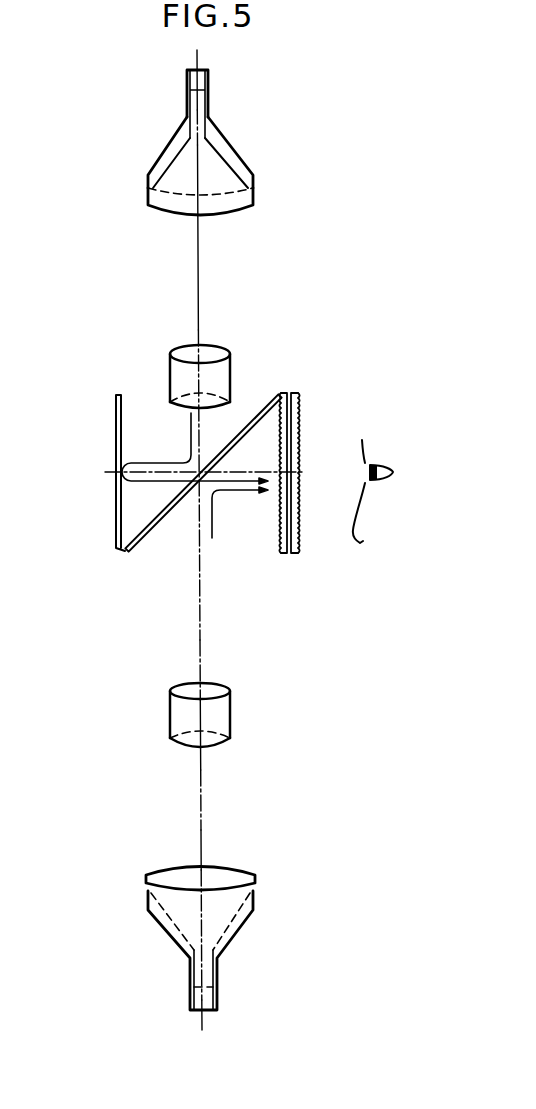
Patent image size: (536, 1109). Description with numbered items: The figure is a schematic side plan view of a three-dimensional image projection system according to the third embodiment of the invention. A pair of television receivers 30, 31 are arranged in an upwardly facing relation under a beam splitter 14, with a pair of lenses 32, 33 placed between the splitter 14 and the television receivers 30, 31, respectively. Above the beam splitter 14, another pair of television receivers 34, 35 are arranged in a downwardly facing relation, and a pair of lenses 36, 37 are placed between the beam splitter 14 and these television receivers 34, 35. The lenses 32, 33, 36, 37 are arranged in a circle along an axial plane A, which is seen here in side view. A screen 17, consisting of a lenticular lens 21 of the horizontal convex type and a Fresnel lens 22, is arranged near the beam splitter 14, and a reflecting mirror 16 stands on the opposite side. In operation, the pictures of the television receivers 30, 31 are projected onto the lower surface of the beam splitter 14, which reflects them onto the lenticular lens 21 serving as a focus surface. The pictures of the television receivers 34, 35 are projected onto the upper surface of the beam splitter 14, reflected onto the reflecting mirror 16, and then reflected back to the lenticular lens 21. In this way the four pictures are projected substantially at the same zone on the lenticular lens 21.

The beam splitter 14 is at (155, 524).
The reflecting mirror 16 is at (122, 525).
The screen 17 is at (313, 481).
The lenticular lens 21 is at (284, 555).
The Fresnel lens 22 is at (295, 555).
The television receiver 30 is at (246, 911).
The television receiver 31 is at (240, 872).
The lens 32 is at (219, 738).
The lens 33 is at (222, 694).
The television receiver 34 is at (242, 200).
The television receiver 35 is at (230, 155).
The lens 36 is at (228, 395).
The lens 37 is at (222, 355).
The axial plane A is at (201, 784).